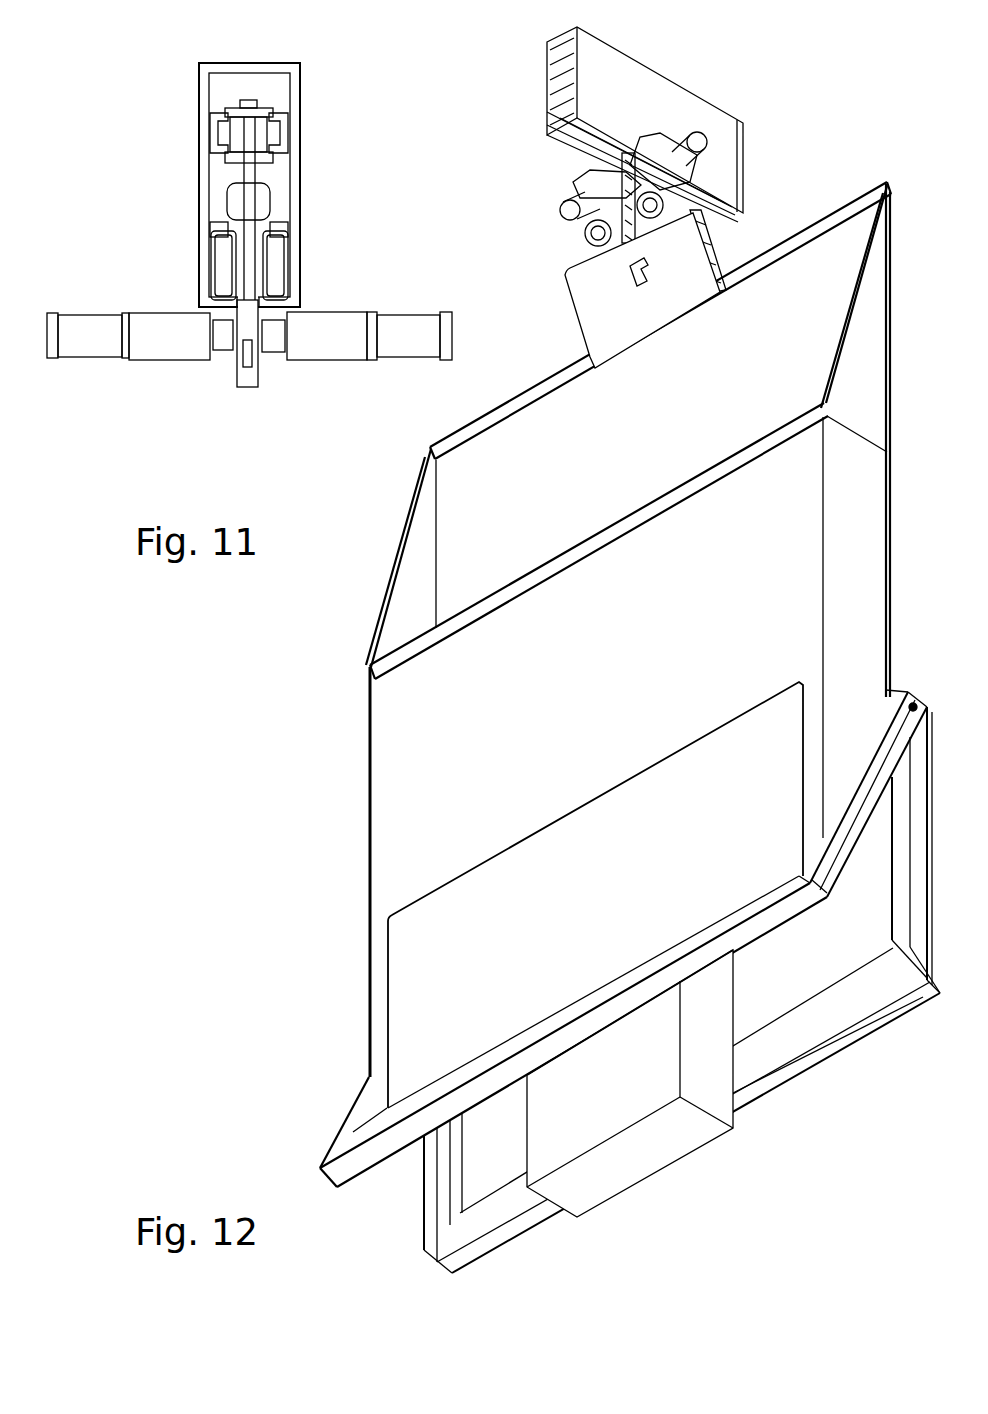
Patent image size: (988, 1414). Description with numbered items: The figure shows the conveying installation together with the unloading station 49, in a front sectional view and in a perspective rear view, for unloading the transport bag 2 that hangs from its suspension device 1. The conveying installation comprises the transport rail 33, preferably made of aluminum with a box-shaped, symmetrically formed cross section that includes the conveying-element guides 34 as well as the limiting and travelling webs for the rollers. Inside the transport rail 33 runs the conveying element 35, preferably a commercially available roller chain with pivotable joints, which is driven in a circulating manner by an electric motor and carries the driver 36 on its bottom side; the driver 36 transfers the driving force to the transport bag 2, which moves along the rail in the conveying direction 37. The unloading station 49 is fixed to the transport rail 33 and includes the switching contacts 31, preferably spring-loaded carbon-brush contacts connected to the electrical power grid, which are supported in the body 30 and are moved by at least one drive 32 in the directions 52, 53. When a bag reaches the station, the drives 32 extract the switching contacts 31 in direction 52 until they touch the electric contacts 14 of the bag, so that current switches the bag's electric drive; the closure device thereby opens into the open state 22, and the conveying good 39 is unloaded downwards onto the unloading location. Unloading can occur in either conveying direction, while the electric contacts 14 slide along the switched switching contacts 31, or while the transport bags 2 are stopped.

In FIG. 12, the suspension device 1 is at (552, 270).
In FIG. 12, the transport bag 2 is at (355, 876).
In FIG. 11, the electric contacts 14 is at (231, 336).
In FIG. 12, the open state 22 is at (832, 1067).
In FIG. 11, the body 30 is at (347, 325).
In FIG. 11, the switching contacts 31 is at (270, 335).
In FIG. 11, the drive 32 is at (413, 325).
In FIG. 11, the transport rail 33 is at (199, 85).
In FIG. 11, the conveying-element guides 34 is at (230, 130).
In FIG. 11, the conveying element 35 is at (230, 138).
In FIG. 11, the driver 36 is at (233, 210).
In FIG. 12, the conveying direction 37 is at (722, 79).
In FIG. 12, the conveying good 39 is at (681, 1134).
In FIG. 11, the unloading station 49 is at (187, 272).
In FIG. 12, the unloading station 49 is at (556, 181).
In FIG. 11, the direction 52 is at (145, 384).
In FIG. 11, the direction 53 is at (147, 421).